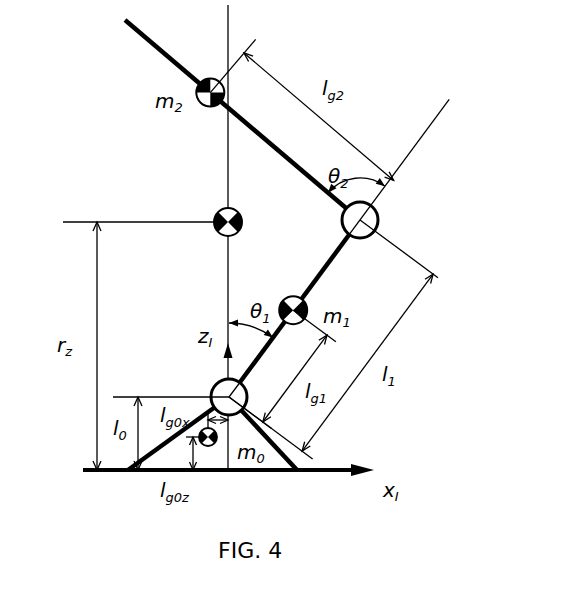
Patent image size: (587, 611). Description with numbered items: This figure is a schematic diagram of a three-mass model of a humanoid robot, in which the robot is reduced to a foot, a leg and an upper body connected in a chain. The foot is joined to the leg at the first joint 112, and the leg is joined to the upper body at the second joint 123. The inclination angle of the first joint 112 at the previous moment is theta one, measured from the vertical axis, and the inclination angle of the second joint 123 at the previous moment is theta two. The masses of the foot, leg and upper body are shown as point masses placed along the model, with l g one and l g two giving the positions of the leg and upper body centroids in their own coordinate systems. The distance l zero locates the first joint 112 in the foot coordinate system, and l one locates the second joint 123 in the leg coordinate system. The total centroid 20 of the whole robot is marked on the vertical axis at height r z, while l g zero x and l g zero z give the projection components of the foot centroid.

The total centroid 20 is at (217, 211).
The first joint 112 is at (212, 388).
The second joint 123 is at (379, 217).